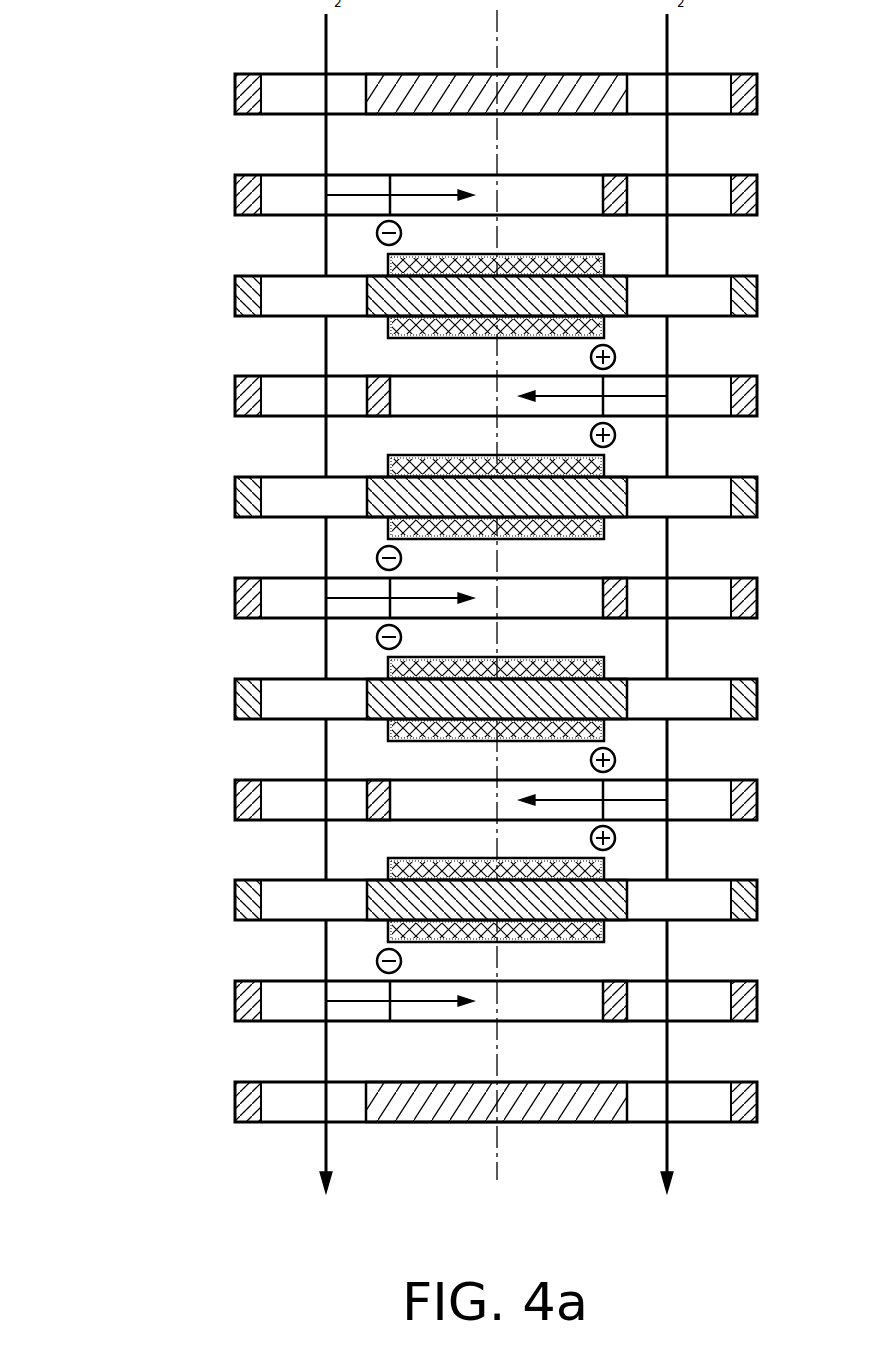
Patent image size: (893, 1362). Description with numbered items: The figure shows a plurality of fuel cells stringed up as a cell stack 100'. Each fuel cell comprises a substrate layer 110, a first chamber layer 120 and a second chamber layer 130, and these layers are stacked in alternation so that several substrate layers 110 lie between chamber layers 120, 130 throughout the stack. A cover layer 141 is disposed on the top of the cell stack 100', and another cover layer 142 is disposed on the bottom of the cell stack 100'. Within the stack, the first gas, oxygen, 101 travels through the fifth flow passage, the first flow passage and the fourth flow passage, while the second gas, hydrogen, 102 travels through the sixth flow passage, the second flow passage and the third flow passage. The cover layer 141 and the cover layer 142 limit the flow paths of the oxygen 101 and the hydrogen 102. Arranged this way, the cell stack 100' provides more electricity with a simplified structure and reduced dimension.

The cell stack 100' is at (85, 14).
The first gas (oxygen) 101 is at (326, 43).
The second gas (hydrogen) 102 is at (667, 43).
The substrate layer 110 is at (235, 296).
The first chamber layer 120 is at (235, 195).
The second chamber layer 130 is at (235, 396).
The cover layer 141 is at (235, 94).
The cover layer 142 is at (235, 1102).